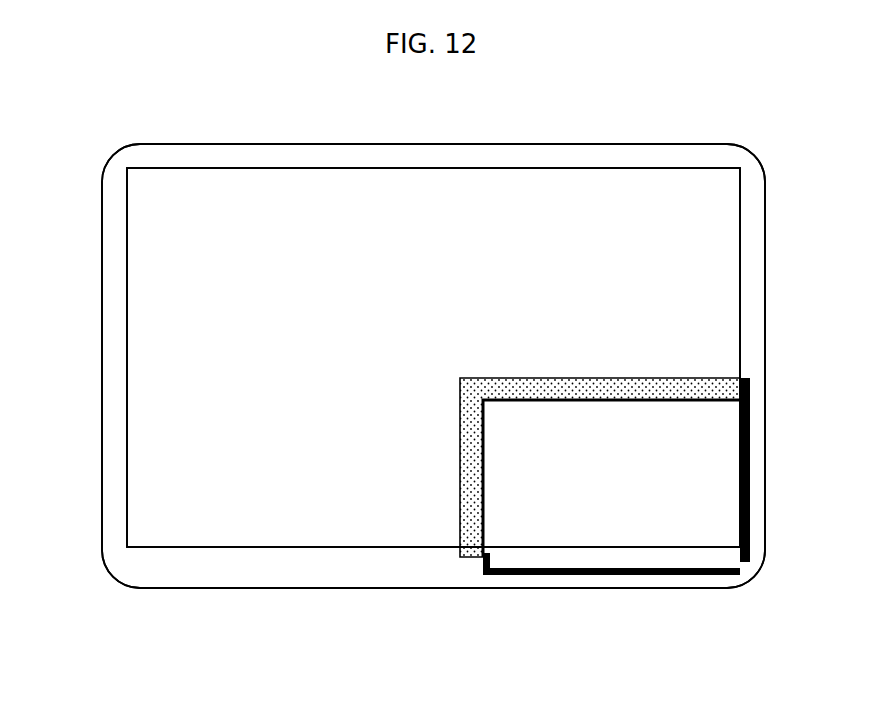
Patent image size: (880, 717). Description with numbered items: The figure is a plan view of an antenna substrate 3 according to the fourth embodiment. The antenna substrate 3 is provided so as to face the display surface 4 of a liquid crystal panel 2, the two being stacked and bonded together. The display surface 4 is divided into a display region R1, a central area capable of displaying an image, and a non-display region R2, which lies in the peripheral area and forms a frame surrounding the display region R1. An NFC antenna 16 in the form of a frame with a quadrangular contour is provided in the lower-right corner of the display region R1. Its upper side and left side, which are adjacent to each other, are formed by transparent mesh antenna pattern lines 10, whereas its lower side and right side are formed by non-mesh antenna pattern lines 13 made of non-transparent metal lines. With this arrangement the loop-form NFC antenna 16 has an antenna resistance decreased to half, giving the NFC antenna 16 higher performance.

The liquid crystal panel 2 is at (283, 140).
The antenna substrate 3 is at (493, 140).
The display surface 4 is at (408, 334).
The display region R1 is at (195, 245).
The non-display region R2 is at (200, 565).
The transparent mesh antenna pattern lines 10 is at (460, 436).
The non-mesh antenna pattern lines 13 is at (500, 557).
The NFC antenna 16 is at (565, 535).